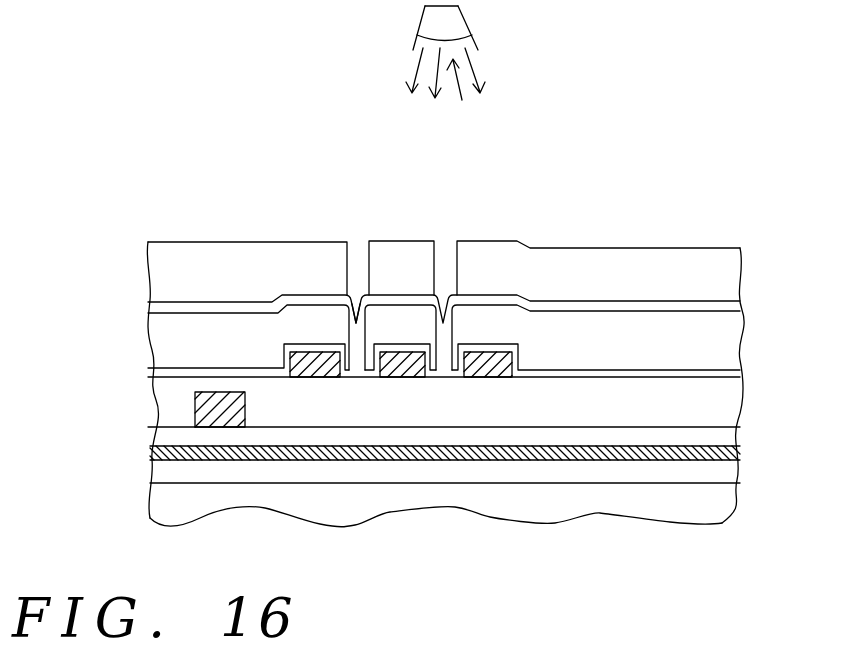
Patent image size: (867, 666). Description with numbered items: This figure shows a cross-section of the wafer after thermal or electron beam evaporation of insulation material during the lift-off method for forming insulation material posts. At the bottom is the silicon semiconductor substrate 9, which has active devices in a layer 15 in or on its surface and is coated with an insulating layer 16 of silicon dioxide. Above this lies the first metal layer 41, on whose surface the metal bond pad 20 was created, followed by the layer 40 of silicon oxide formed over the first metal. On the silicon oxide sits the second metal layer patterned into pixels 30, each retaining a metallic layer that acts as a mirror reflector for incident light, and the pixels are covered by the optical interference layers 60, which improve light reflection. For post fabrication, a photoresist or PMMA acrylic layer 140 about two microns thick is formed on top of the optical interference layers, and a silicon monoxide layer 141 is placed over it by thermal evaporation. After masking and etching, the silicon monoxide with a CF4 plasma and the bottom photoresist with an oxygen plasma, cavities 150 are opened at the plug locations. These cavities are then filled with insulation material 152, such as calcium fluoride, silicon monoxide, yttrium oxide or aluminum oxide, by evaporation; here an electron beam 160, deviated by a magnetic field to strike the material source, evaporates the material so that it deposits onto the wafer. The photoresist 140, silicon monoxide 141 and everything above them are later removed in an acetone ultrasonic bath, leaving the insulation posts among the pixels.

The substrate 9 is at (728, 504).
The layer of active devices 15 is at (733, 470).
The insulating layer 16 is at (742, 448).
The metal bond pad 20 is at (214, 410).
The pixel 30 is at (403, 366).
The layer of silicon oxide 40 is at (728, 404).
The first metal layer 41 is at (158, 438).
The optical interference layers 60 is at (318, 350).
The photoresist layer 140 is at (728, 346).
The silicon monoxide layer 141 is at (726, 308).
The cavities 150 is at (357, 323).
The insulation material 152 is at (446, 323).
The electron beam 160 is at (462, 100).